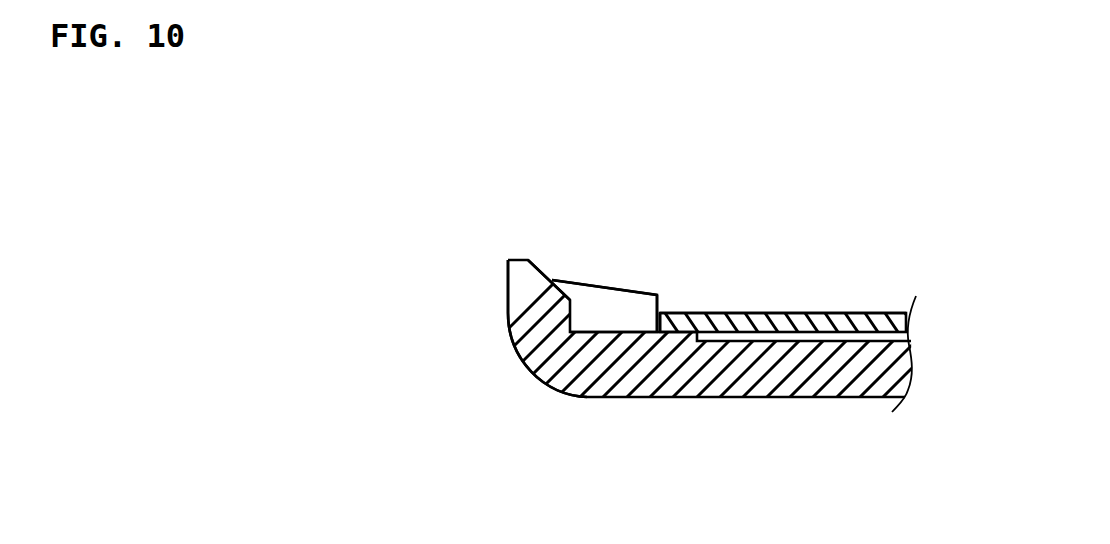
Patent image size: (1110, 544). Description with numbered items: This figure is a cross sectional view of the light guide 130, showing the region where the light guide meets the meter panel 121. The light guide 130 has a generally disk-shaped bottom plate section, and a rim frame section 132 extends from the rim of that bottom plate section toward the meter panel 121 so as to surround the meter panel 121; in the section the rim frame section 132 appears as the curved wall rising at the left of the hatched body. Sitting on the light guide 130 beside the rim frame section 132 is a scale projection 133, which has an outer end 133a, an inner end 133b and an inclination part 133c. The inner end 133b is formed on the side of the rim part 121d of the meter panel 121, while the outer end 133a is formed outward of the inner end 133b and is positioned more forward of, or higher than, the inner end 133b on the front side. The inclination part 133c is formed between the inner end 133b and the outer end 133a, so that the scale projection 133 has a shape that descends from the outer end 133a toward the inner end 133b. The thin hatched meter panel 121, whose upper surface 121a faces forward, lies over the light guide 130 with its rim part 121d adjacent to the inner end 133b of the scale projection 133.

The light guide 130 is at (792, 401).
The rim frame section 132 is at (520, 347).
The scale projection 133 is at (757, 179).
The outer end 133a is at (548, 278).
The inclination part 133c is at (600, 278).
The inner end 133b is at (647, 288).
The meter panel 121 is at (888, 306).
The upper surface of layer 121a is at (840, 312).
The rim part 121d is at (663, 313).